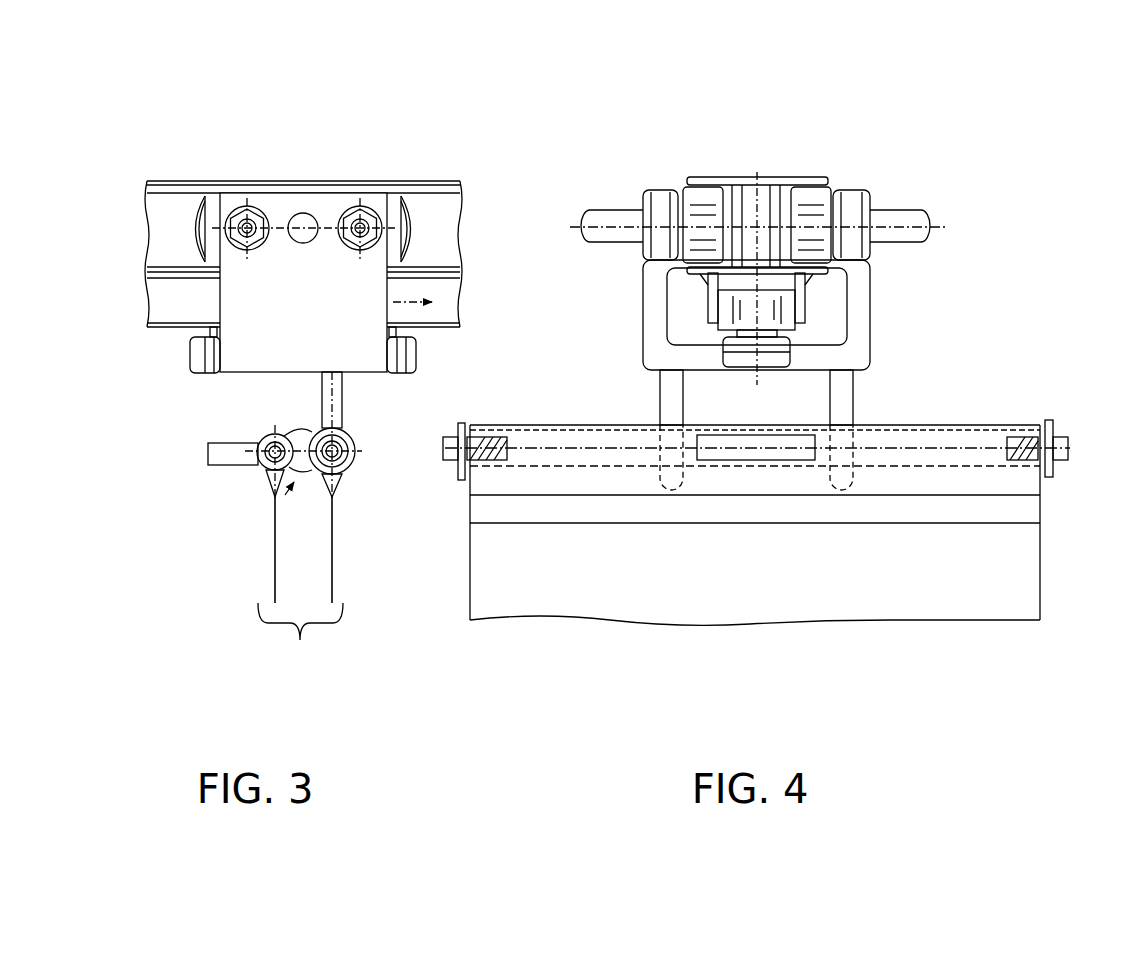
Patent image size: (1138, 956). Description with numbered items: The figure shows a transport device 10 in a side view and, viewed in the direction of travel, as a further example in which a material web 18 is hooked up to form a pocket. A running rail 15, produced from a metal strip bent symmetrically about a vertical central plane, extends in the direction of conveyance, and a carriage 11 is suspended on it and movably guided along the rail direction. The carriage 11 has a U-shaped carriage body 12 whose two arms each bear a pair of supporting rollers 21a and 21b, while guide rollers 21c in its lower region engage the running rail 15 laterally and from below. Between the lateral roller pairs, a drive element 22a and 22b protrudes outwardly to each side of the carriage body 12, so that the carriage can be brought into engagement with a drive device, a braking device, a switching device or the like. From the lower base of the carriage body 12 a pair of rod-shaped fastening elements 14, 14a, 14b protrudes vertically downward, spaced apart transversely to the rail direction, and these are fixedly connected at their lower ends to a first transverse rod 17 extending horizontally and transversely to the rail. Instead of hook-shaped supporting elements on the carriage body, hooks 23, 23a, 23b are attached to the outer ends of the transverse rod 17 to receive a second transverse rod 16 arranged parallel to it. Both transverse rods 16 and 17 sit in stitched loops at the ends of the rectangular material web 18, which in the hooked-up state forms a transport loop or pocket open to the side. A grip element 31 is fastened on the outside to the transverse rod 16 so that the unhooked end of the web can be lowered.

In FIG. 4, the transport device 10 is at (533, 376).
In FIG. 3, the carriage 11 is at (195, 383).
In FIG. 4, the carriage 11 is at (852, 165).
In FIG. 3, the U-shaped carriage body 12 is at (289, 314).
In FIG. 4, the U-shaped carriage body 12 is at (862, 308).
In FIG. 3, the fastening element 14 is at (340, 406).
In FIG. 4, the fastening element 14a is at (675, 400).
In FIG. 4, the fastening element 14b is at (838, 402).
In FIG. 3, the running rail 15 is at (428, 218).
In FIG. 4, the running rail 15 is at (751, 173).
In FIG. 3, the second transverse rod 16 is at (252, 470).
In FIG. 4, the second transverse rod 16 is at (940, 450).
In FIG. 3, the first transverse rod 17 is at (338, 460).
In FIG. 3, the material web 18 is at (300, 640).
In FIG. 4, the material web 18 is at (518, 597).
In FIG. 4, the supporting roller 21a is at (698, 212).
In FIG. 4, the supporting roller 21b is at (800, 212).
In FIG. 4, the guide roller 21c is at (735, 310).
In FIG. 3, the drive element 22a is at (307, 236).
In FIG. 4, the drive element 22a is at (605, 226).
In FIG. 4, the drive element 22b is at (900, 228).
In FIG. 3, the hook 23 is at (270, 525).
In FIG. 4, the hook 23a is at (463, 487).
In FIG. 4, the hook 23b is at (1045, 475).
In FIG. 3, the grip element 31 is at (232, 465).
In FIG. 4, the grip element 31 is at (755, 462).